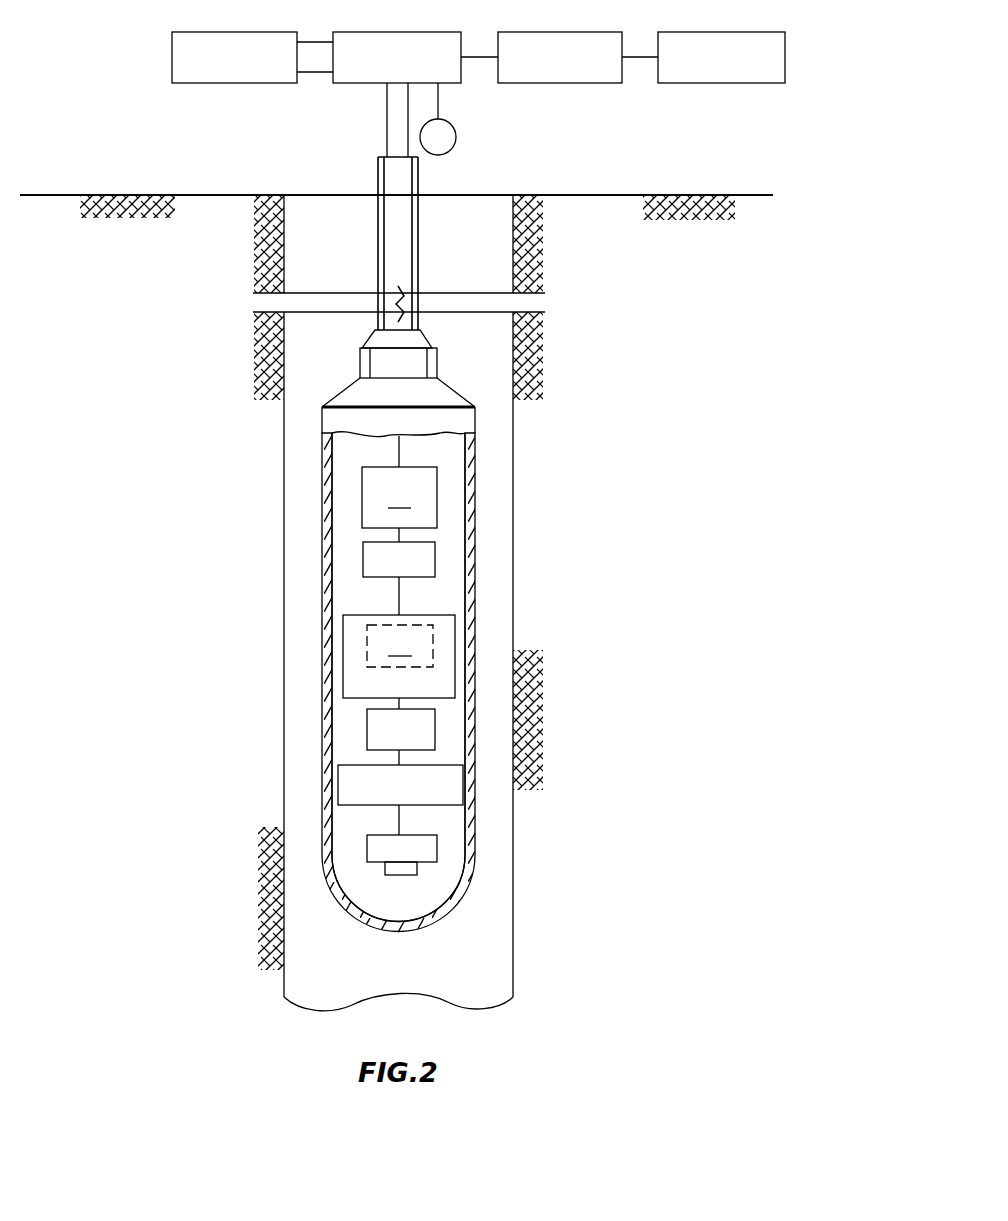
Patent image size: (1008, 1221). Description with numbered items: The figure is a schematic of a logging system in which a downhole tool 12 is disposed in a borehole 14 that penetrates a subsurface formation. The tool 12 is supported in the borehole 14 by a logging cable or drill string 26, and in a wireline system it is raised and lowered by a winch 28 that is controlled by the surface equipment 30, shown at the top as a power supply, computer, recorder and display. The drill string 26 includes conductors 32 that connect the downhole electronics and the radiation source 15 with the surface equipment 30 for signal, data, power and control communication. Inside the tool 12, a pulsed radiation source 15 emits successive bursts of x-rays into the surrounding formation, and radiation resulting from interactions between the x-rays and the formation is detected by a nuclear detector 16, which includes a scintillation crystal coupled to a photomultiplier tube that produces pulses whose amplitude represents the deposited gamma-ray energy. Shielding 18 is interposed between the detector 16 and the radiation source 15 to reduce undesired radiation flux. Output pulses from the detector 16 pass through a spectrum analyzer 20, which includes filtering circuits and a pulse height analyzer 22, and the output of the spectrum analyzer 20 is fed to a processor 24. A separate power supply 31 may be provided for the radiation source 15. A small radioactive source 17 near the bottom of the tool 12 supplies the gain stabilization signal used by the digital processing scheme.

The surface equipment 30 is at (172, 45).
The conductors 32 is at (385, 128).
The winch 28 is at (456, 127).
The drill string 26 is at (378, 176).
The borehole 14 is at (287, 952).
The downhole tool 12 is at (470, 377).
The processor 24 is at (437, 497).
The power supply 31 is at (435, 555).
The spectrum analyzer 20 is at (455, 623).
The pulse height analyzer 22 is at (433, 643).
The nuclear detector 16 is at (435, 723).
The shielding 18 is at (463, 780).
The pulsed radiation source 15 is at (437, 846).
The radioactive source 17 is at (410, 875).